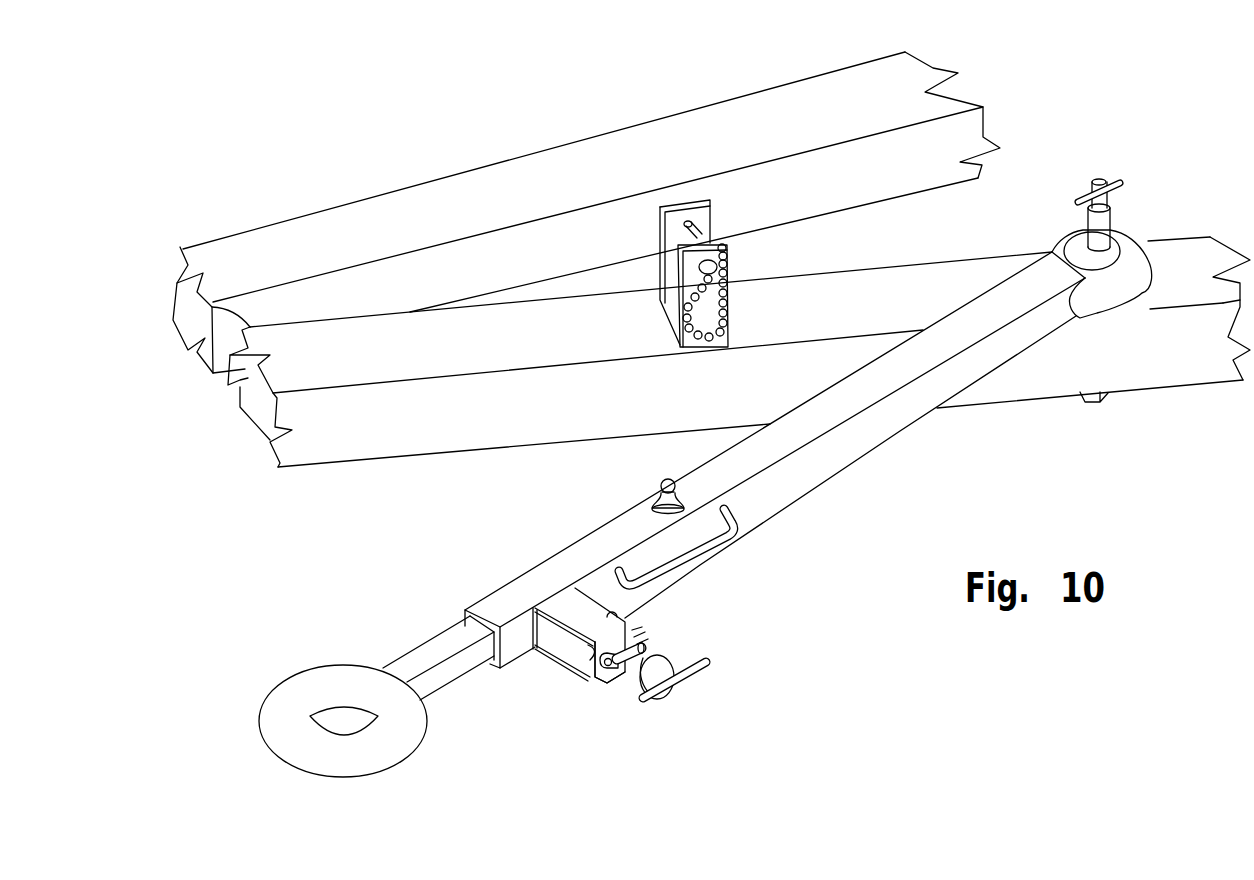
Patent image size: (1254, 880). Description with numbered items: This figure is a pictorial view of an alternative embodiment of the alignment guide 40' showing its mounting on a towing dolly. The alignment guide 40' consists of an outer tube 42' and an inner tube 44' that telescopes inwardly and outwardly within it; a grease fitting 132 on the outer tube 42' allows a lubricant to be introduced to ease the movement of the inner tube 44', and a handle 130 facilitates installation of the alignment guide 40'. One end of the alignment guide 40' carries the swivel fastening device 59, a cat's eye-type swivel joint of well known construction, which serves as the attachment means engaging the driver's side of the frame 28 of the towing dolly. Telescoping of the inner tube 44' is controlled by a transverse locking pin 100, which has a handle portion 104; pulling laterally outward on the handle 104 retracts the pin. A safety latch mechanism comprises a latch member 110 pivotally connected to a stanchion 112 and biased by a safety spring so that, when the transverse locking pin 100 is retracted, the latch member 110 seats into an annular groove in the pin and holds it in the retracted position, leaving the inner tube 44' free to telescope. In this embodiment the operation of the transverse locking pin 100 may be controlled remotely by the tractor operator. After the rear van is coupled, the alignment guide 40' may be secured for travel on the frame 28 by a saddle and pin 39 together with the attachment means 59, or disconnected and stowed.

The frame 28 is at (1045, 375).
The saddle and pin 39 is at (705, 208).
The alignment guide 40' is at (775, 439).
The outer tube 42' is at (451, 574).
The inner tube 44' is at (384, 710).
The swivel fastening device 59 is at (1133, 243).
The transverse locking pin 100 is at (620, 675).
The handle portion 104 is at (692, 677).
The latch member 110 is at (640, 645).
The stanchion 112 is at (573, 607).
The handle 130 is at (717, 548).
The grease fitting 132 is at (673, 477).